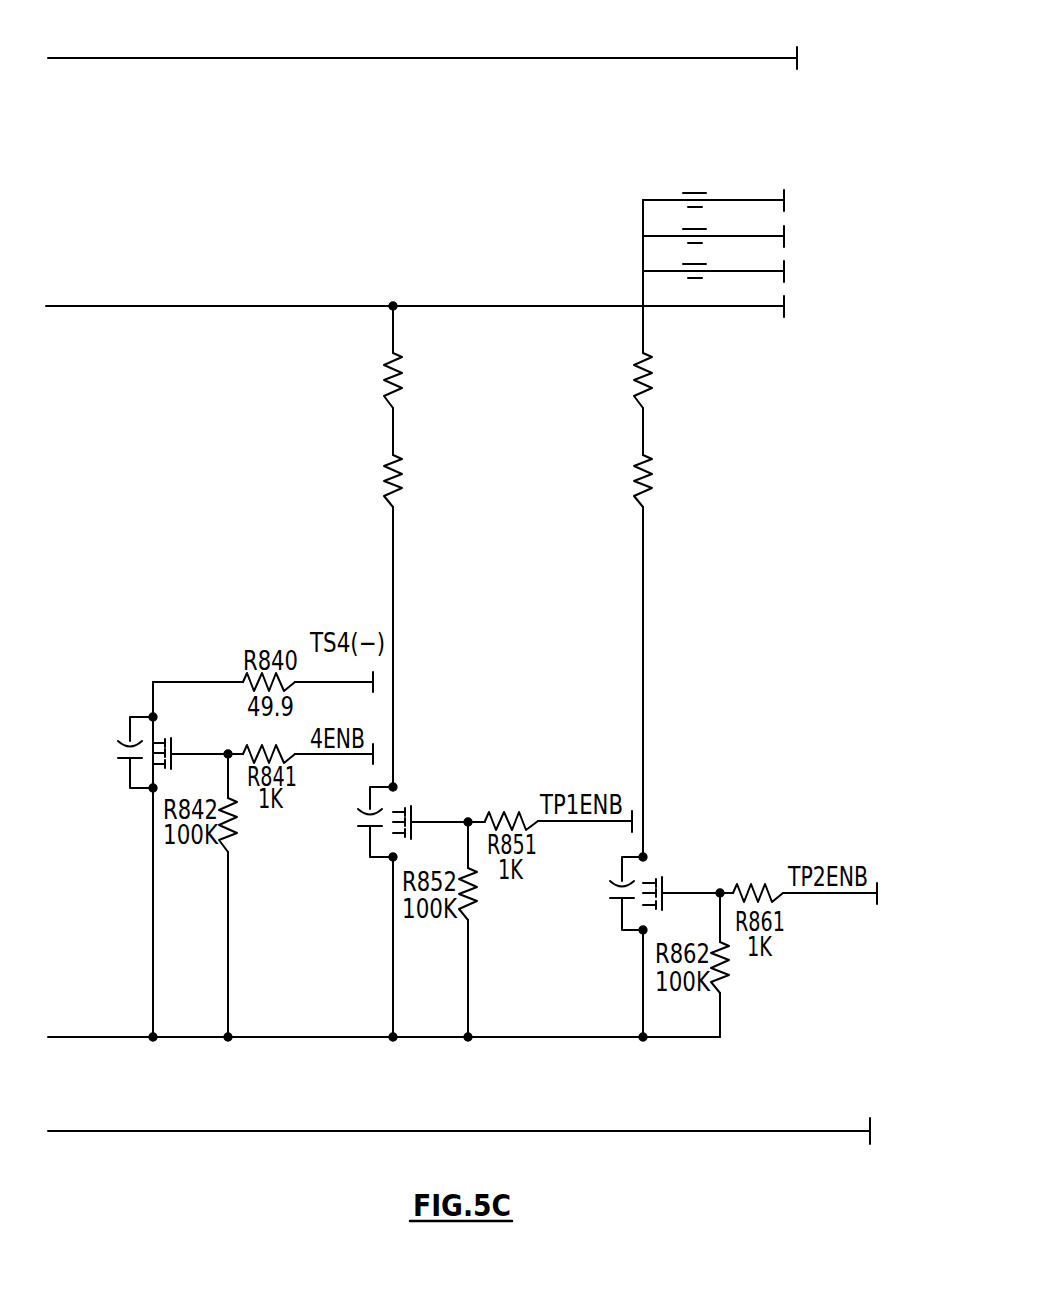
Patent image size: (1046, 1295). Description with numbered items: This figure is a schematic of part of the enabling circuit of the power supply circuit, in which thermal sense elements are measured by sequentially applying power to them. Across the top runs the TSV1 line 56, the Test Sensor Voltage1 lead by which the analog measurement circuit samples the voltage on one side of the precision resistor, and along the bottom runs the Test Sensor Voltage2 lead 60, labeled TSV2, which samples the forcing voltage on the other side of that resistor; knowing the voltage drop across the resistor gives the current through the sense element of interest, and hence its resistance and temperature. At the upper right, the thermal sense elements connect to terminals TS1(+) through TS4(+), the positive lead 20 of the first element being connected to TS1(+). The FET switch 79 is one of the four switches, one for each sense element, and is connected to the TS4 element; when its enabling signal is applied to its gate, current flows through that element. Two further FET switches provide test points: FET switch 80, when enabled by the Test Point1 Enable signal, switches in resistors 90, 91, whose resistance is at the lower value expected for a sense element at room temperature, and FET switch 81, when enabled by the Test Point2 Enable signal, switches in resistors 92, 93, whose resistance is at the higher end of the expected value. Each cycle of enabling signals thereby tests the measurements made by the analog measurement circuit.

The test supply voltage bus TSV1 56 is at (432, 58).
The +lead 20 is at (706, 200).
The resistor 90 is at (477, 379).
The resistor 91 is at (477, 472).
The resistor 92 is at (727, 379).
The resistor 93 is at (727, 472).
The FET switch 79 is at (132, 788).
The FET switch 80 is at (372, 857).
The FET switch 81 is at (624, 930).
The Test Sensor Voltage2 lead 60 is at (561, 1131).